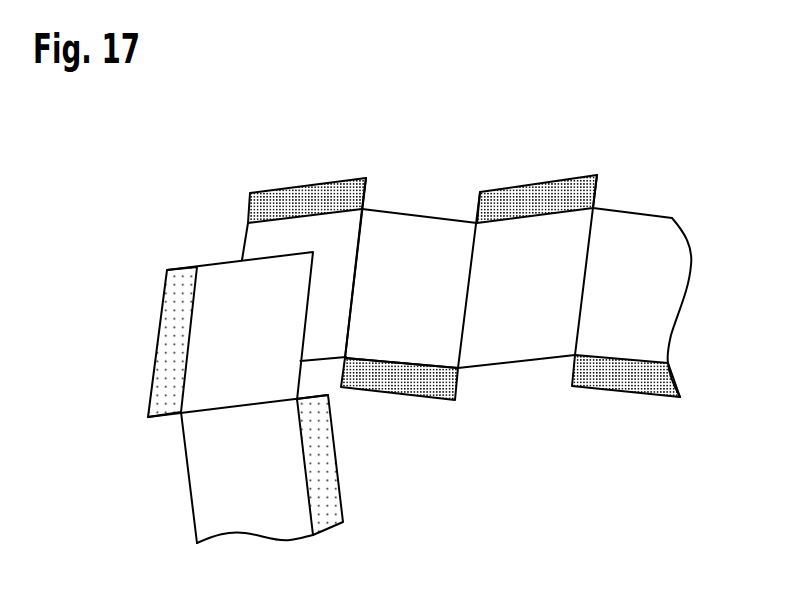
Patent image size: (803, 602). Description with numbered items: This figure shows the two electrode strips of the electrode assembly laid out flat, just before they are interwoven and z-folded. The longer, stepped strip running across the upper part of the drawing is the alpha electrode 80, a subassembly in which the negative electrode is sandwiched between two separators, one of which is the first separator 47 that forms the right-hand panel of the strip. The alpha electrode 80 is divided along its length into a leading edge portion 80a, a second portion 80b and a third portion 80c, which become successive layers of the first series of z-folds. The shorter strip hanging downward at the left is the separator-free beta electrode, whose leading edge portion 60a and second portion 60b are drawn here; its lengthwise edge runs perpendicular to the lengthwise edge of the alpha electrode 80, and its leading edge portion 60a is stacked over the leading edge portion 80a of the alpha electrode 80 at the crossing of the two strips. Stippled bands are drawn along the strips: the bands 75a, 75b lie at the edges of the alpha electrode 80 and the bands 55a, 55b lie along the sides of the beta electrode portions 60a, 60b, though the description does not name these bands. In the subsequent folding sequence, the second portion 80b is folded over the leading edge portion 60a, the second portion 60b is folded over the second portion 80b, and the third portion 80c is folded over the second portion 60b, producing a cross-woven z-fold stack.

The first separator 47 is at (645, 237).
The first adhesive strip 55a is at (173, 297).
The second adhesive strip 55b is at (330, 492).
The leading edge portion of the beta electrode 60a is at (193, 334).
The second portion of the beta electrode 60b is at (271, 469).
The upper adhesive layer 75a is at (318, 188).
The lower adhesive layer 75b is at (385, 385).
The alpha electrode 80 is at (384, 288).
The leading edge portion of the alpha electrode 80a is at (245, 235).
The second portion of the alpha electrode 80b is at (410, 288).
The third portion of the alpha electrode 80c is at (552, 237).